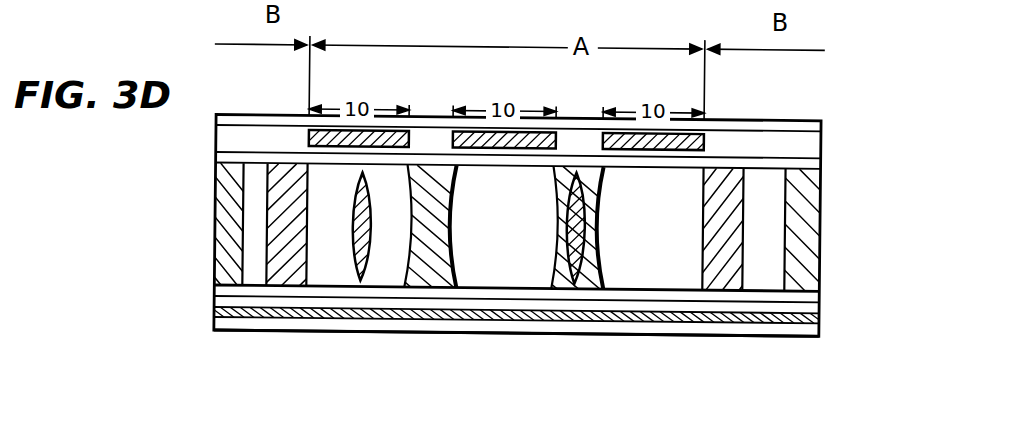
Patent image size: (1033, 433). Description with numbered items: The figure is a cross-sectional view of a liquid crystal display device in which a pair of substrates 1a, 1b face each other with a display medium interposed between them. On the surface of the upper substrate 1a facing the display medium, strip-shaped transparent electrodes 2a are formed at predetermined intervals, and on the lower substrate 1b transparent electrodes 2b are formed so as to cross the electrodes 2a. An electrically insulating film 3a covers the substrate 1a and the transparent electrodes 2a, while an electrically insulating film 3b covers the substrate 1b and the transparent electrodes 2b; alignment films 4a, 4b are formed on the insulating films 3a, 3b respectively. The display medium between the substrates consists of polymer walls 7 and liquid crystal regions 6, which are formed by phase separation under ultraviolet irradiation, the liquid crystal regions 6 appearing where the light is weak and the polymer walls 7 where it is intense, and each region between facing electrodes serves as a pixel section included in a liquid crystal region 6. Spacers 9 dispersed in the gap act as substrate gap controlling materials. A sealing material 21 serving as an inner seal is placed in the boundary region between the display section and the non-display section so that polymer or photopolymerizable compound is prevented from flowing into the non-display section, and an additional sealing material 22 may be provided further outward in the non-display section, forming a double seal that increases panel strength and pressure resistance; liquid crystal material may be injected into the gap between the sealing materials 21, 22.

The substrate 1a is at (821, 126).
The substrate 1b is at (806, 336).
The transparent electrodes 2a is at (667, 136).
The transparent electrodes 2b is at (821, 319).
The electrically insulating film 3a is at (821, 148).
The electrically insulating film 3b is at (821, 307).
The alignment film 4a is at (822, 168).
The alignment film 4b is at (821, 295).
The liquid crystal regions 6 is at (683, 286).
The polymer walls 7 is at (593, 278).
The spacers 9 is at (567, 276).
The sealing material 21 is at (723, 276).
The sealing material 22 is at (793, 288).